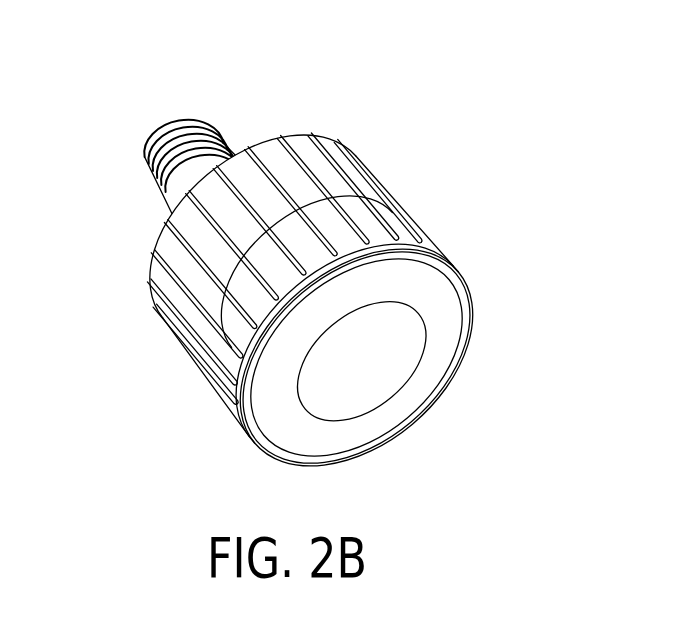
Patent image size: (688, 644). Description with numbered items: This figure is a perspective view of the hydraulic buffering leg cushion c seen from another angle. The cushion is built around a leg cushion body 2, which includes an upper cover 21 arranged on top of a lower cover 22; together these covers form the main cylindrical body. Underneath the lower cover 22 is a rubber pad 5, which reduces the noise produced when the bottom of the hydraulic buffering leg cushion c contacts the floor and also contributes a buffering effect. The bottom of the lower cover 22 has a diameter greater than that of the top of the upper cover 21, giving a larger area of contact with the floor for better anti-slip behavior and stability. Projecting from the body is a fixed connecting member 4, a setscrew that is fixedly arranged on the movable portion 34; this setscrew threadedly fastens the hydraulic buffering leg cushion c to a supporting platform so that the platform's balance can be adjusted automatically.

The leg cushion body 2 is at (174, 457).
The upper cover 21 is at (180, 352).
The lower cover 22 is at (220, 405).
The movable portion 34 is at (224, 156).
The fixed connecting member 4 is at (207, 130).
The rubber pad 5 is at (423, 381).
The hydraulic buffering leg cushion c is at (548, 145).